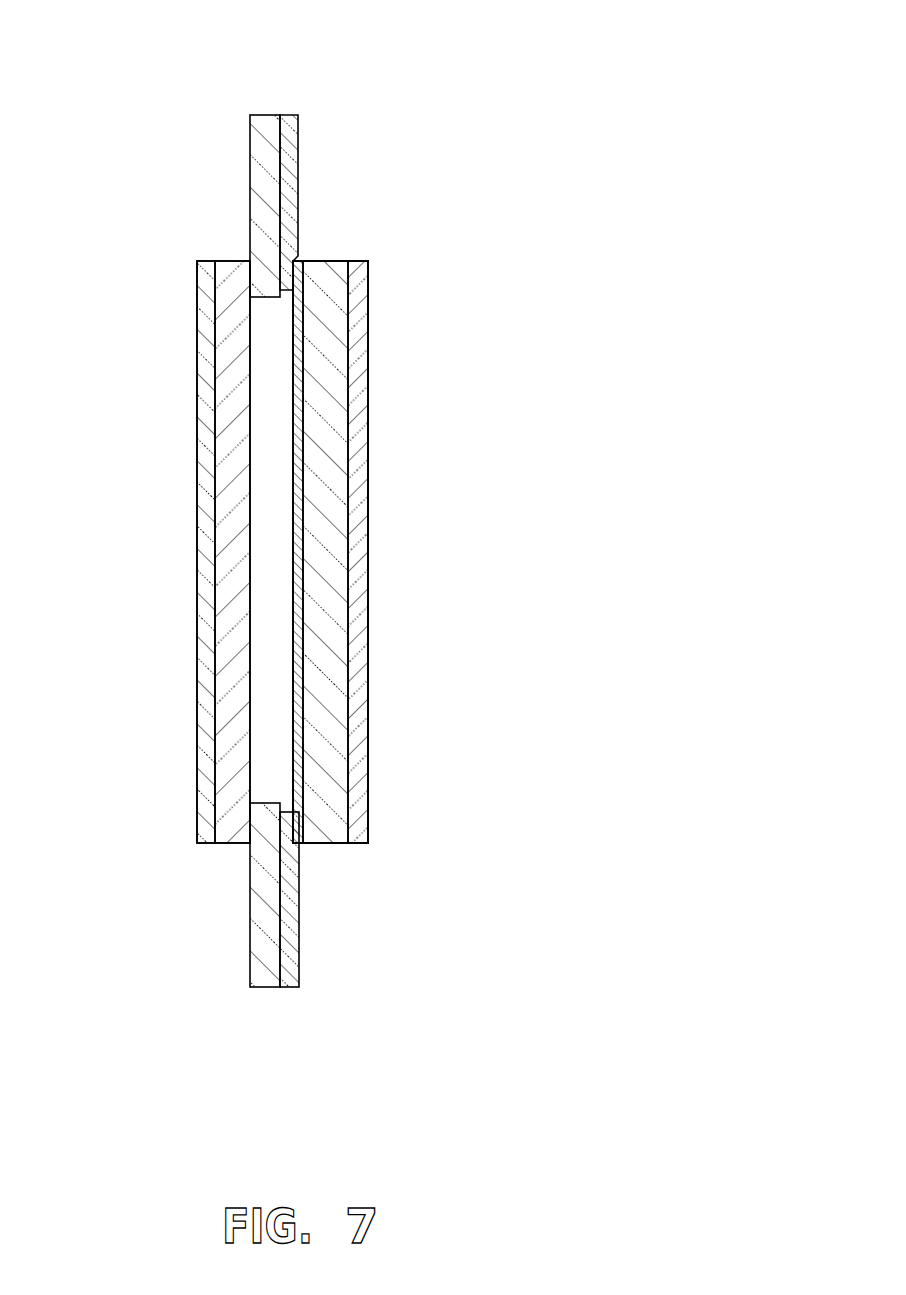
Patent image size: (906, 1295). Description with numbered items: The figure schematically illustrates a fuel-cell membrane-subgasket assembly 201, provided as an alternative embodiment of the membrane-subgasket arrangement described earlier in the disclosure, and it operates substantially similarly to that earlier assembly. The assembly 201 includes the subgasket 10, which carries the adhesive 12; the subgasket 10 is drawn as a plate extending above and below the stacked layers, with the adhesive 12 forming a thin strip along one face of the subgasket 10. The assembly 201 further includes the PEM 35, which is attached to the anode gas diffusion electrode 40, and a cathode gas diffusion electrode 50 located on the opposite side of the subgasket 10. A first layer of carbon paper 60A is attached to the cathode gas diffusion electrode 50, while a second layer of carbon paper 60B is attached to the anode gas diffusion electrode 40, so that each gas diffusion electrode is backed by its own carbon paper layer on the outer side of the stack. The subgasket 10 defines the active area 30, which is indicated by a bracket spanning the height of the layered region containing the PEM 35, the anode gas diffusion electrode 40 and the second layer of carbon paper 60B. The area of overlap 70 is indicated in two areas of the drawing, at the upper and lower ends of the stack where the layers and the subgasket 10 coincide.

The fuel-cell membrane-subgasket assembly 201 is at (504, 66).
The subgasket 10 is at (248, 165).
The adhesive 12 is at (298, 165).
The area of overlap 70 is at (166, 278).
The first layer of carbon paper 60A is at (205, 845).
The cathode gas diffusion electrode 50 is at (232, 845).
The active area 30 is at (390, 297).
The PEM 35 is at (298, 845).
The anode gas diffusion electrode 40 is at (327, 843).
The second layer of carbon paper 60B is at (368, 837).